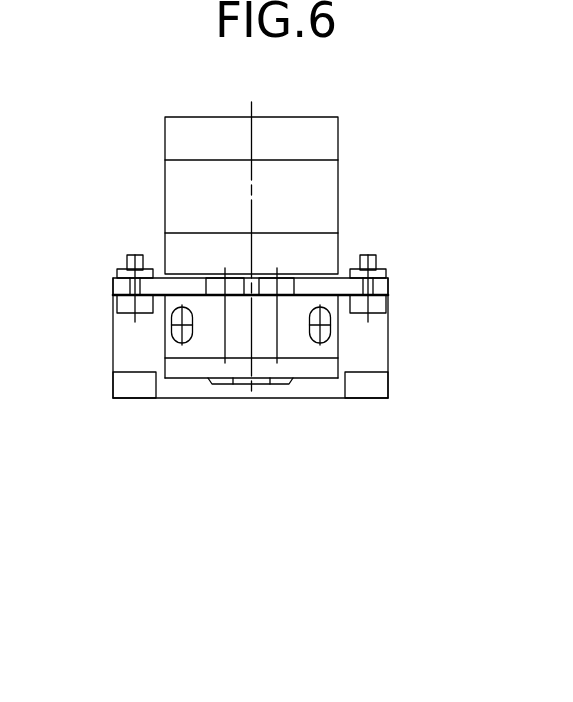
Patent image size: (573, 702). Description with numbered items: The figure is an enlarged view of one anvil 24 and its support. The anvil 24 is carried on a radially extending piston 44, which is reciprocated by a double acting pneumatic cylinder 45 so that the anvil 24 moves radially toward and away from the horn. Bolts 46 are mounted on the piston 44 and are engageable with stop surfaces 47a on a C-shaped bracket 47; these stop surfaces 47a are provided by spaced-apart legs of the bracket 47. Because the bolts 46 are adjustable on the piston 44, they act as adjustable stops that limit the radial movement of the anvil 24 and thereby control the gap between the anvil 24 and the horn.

The double acting pneumatic cylinder 45 is at (338, 195).
The bolts 46 is at (387, 312).
The C-shaped bracket 47 is at (388, 335).
The stop surfaces 47a is at (113, 362).
The piston 44 is at (293, 358).
The anvil 24 is at (193, 378).